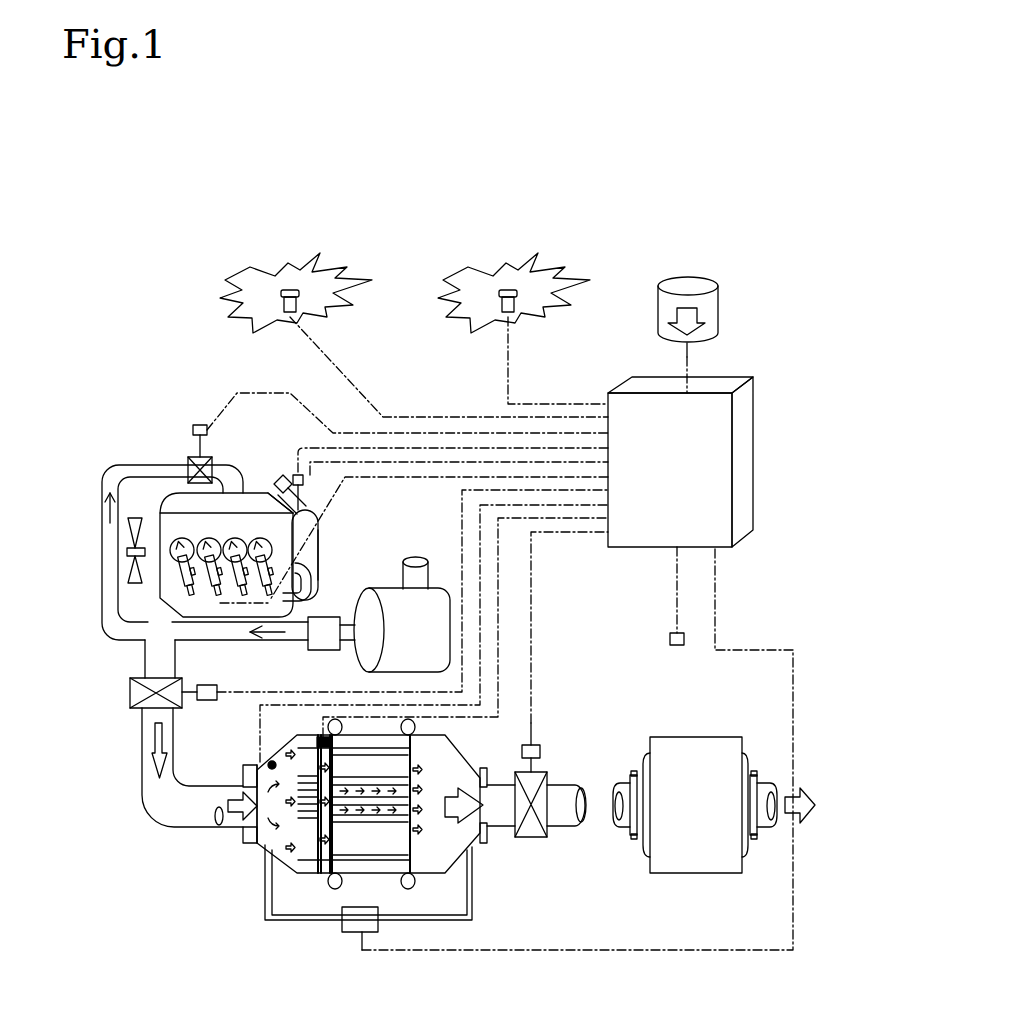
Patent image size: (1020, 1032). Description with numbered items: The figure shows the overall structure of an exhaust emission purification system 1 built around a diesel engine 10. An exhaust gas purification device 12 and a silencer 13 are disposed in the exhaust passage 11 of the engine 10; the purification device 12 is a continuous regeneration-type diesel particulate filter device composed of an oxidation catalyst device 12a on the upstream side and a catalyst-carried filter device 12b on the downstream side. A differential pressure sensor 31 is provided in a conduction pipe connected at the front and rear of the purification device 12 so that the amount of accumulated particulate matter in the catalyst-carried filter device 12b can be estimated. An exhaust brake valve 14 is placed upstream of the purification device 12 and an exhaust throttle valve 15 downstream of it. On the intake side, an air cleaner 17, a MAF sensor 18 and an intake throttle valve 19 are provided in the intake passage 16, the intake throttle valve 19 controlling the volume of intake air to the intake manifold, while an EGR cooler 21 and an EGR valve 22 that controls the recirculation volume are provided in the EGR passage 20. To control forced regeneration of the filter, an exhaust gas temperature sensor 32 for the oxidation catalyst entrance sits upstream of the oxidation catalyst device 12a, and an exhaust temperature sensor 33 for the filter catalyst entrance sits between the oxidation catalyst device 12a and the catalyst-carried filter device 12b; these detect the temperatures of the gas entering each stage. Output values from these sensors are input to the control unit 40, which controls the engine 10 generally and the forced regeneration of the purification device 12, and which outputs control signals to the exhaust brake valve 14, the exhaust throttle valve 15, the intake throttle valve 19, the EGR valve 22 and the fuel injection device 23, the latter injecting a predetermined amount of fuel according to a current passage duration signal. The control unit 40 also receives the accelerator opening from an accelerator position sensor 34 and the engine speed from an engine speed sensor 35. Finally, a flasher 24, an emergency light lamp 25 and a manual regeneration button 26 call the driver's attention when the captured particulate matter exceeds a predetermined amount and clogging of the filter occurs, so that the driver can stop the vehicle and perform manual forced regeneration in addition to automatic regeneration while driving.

The exhaust emission purification system 1 is at (623, 298).
The diesel engine 10 is at (158, 517).
The exhaust passage 11 is at (153, 735).
The exhaust gas purification device 12 is at (353, 868).
The oxidation catalyst device 12a is at (308, 845).
The catalyst-carried filter device 12b is at (380, 843).
The silencer 13 is at (700, 850).
The exhaust brake valve 14 is at (130, 692).
The exhaust throttle valve 15 is at (543, 773).
The intake passage 16 is at (100, 535).
The air cleaner 17 is at (430, 633).
The MAF sensor 18 is at (328, 617).
The intake throttle valve 19 is at (190, 455).
The EGR passage 20 is at (308, 505).
The EGR cooler 21 is at (315, 540).
The EGR valve 22 is at (275, 480).
The fuel injection device 23 is at (178, 572).
The flasher 24 is at (289, 290).
The emergency light lamp 25 is at (508, 290).
The manual regeneration button 26 is at (705, 287).
The differential pressure sensor 31 is at (353, 932).
The exhaust gas temperature sensor for the oxidation catalyst entrance 32 is at (270, 763).
The exhaust temperature sensor for the filter catalyst entrance 33 is at (318, 738).
The accelerator position sensor 34 is at (677, 645).
The engine speed sensor 35 is at (290, 478).
The control unit 40 is at (745, 473).